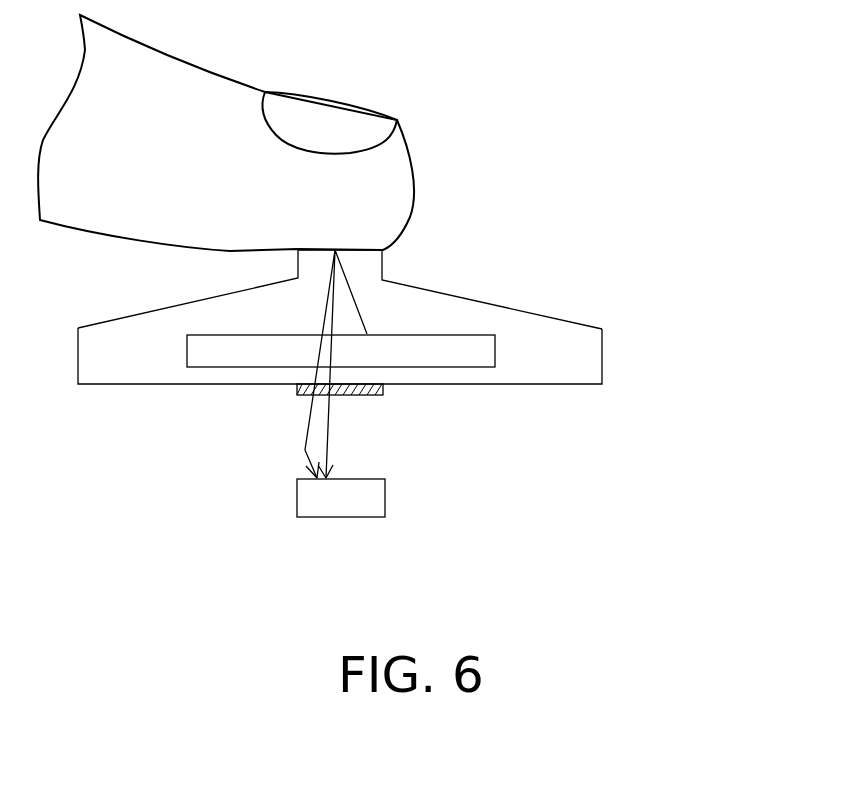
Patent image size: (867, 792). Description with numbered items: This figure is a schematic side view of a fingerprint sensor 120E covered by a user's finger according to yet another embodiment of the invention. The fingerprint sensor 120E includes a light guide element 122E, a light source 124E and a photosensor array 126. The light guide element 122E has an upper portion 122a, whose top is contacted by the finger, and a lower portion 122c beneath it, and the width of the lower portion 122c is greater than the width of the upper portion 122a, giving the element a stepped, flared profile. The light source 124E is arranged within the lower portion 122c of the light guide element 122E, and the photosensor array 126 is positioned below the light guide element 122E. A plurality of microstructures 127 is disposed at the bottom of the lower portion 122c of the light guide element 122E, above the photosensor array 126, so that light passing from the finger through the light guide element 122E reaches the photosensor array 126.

The fingerprint sensor 120E is at (452, 390).
The light guide element 122E is at (452, 346).
The upper portion 122a is at (373, 263).
The lower portion 122c is at (415, 389).
The light source 124E is at (219, 357).
The microstructures 127 is at (383, 390).
The photosensor array 126 is at (377, 497).